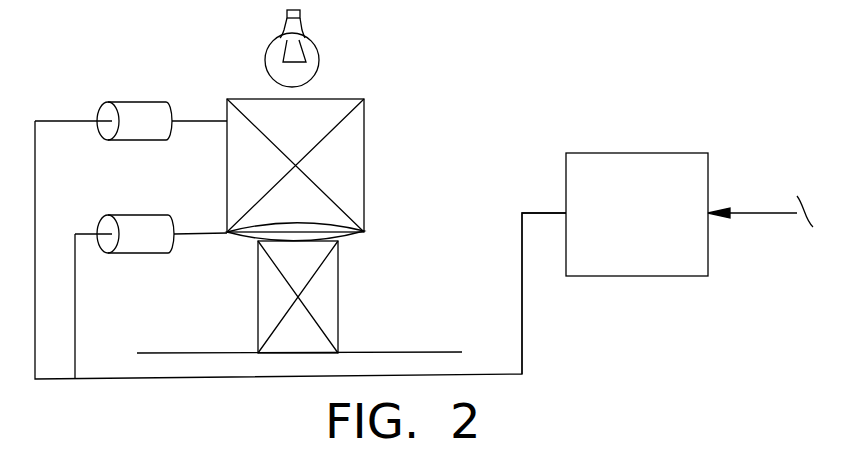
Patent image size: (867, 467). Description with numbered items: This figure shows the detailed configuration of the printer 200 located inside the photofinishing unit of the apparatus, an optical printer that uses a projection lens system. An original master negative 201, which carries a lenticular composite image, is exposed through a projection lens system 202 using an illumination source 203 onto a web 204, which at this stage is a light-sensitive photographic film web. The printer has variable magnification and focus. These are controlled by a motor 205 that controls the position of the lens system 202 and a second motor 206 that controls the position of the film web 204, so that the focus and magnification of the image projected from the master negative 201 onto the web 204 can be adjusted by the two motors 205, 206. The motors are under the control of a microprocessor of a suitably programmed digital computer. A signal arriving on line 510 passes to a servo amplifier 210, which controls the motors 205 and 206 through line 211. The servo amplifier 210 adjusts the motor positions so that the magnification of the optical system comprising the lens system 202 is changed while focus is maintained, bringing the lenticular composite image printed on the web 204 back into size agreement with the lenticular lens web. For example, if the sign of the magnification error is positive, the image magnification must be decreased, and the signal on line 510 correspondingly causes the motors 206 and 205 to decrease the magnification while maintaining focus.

The printer 200 is at (395, 168).
The original master negative 201 is at (250, 98).
The projection lens system 202 is at (357, 240).
The illumination source 203 is at (320, 62).
The web 204 is at (200, 353).
The motor 205 is at (135, 214).
The motor 206 is at (134, 101).
The servo amplifier 210 is at (637, 152).
The line 211 is at (522, 294).
The line 510 is at (748, 213).